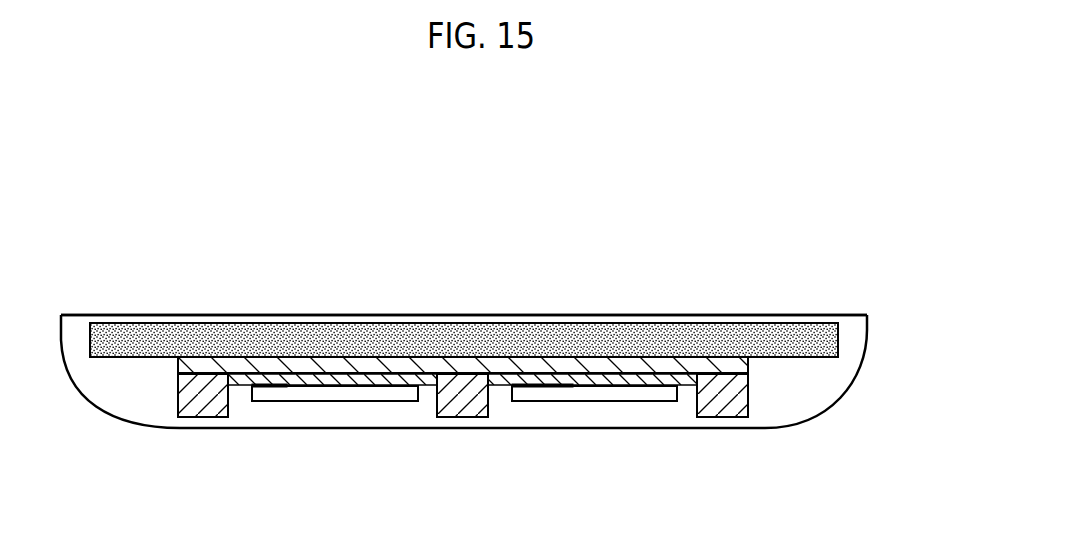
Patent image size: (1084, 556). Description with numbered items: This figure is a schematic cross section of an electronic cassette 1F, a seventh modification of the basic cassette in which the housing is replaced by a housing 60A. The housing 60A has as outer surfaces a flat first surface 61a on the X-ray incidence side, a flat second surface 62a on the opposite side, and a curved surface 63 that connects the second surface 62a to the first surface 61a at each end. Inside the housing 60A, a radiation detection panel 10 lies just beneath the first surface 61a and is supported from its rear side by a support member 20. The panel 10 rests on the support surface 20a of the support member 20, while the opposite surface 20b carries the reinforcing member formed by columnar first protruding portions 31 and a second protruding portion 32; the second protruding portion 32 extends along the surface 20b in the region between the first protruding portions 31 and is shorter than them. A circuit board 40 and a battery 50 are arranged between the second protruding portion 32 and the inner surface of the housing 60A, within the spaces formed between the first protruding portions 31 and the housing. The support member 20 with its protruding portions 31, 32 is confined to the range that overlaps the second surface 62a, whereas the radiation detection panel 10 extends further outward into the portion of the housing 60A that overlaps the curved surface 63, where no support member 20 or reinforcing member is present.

The electronic cassette 1F is at (653, 187).
The radiation detection panel 10 is at (545, 334).
The support member 20 is at (750, 363).
The support surface 20a is at (702, 356).
The surface 20b is at (750, 408).
The first protruding portion 31 is at (217, 410).
The second protruding portion 32 is at (286, 387).
The circuit board 40 is at (340, 398).
The battery 50 is at (651, 397).
The housing 60A is at (849, 309).
The first surface 61a is at (363, 314).
The second surface 62a is at (418, 430).
The curved surface 63 is at (122, 414).